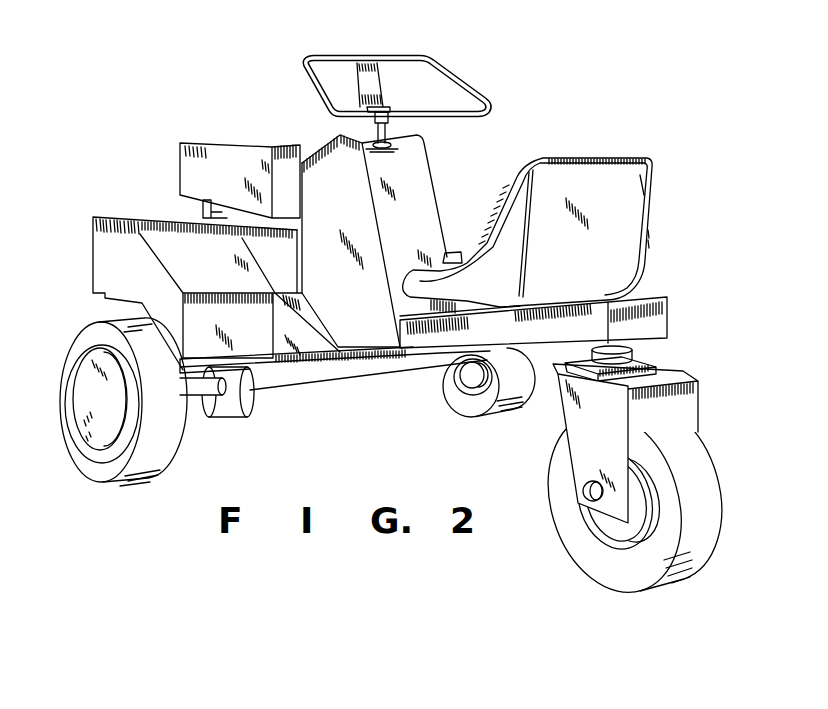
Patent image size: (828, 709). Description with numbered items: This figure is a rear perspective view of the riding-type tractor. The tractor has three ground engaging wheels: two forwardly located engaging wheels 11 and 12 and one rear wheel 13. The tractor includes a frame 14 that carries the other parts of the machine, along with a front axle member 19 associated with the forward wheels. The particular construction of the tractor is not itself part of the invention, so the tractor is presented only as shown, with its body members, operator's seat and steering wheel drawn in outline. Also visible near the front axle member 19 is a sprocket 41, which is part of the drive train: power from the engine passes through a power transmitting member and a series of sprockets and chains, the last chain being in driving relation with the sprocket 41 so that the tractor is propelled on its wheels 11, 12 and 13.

The engaging wheel 11 is at (177, 443).
The engaging wheel 12 is at (464, 404).
The rear wheel 13 is at (553, 470).
The frame 14 is at (656, 290).
The front axle member 19 is at (358, 375).
The sprocket 41 is at (248, 416).